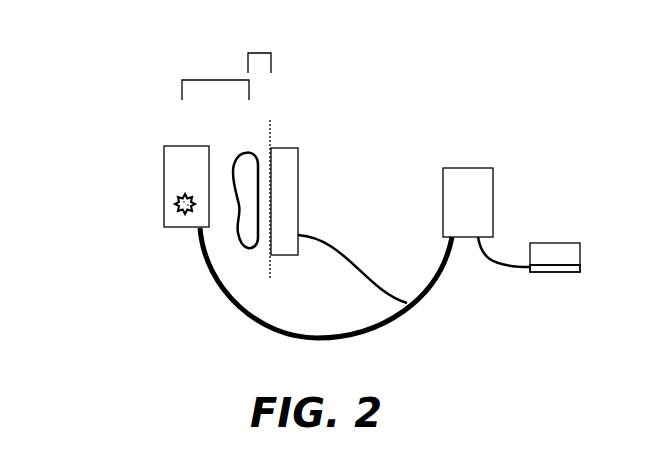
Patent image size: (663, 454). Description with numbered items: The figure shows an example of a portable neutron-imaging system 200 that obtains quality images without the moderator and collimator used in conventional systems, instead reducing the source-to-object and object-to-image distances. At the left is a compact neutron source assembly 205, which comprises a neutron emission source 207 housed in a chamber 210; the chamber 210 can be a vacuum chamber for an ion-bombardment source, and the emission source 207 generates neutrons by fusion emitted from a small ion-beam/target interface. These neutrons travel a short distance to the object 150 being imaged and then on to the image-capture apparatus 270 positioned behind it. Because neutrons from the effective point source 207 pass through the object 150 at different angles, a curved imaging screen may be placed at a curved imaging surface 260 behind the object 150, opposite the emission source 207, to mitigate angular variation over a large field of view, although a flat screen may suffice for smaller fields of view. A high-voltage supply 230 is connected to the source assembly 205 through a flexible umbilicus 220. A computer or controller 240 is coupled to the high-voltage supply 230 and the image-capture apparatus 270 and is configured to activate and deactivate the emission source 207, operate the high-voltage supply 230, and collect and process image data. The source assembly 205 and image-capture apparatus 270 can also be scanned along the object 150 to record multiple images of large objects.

The portable neutron-imaging system 200 is at (438, 62).
The compact neutron source assembly 205 is at (148, 169).
The chamber 210 is at (163, 198).
The neutron emission source 207 is at (183, 213).
The curved imaging surface 260 is at (272, 127).
The image-capture apparatus 270 is at (298, 165).
The object 150 is at (252, 250).
The flexible umbilicus 220 is at (445, 275).
The high-voltage supply 230 is at (483, 168).
The computer or controller 240 is at (567, 243).